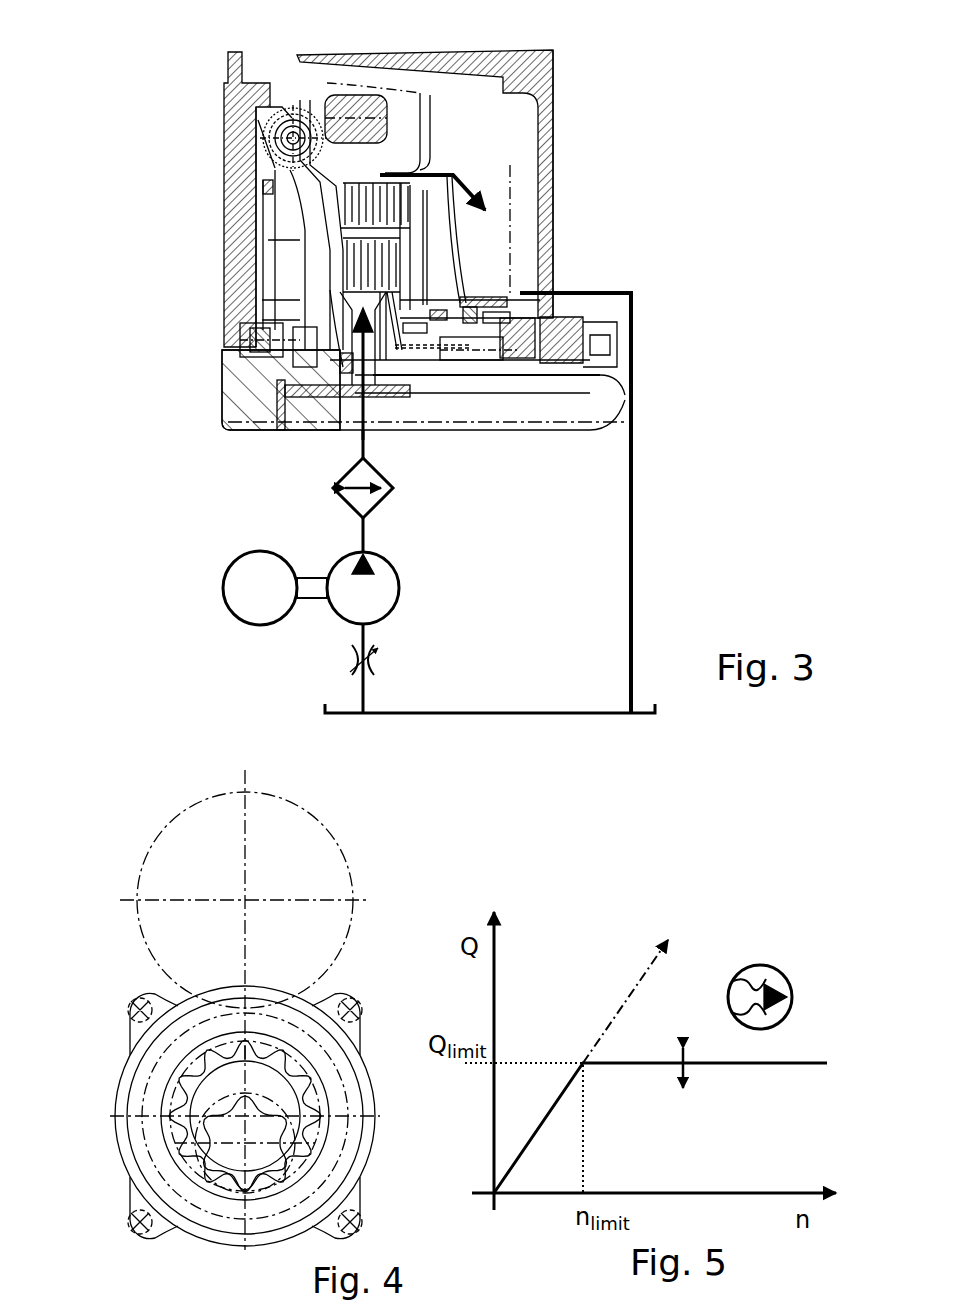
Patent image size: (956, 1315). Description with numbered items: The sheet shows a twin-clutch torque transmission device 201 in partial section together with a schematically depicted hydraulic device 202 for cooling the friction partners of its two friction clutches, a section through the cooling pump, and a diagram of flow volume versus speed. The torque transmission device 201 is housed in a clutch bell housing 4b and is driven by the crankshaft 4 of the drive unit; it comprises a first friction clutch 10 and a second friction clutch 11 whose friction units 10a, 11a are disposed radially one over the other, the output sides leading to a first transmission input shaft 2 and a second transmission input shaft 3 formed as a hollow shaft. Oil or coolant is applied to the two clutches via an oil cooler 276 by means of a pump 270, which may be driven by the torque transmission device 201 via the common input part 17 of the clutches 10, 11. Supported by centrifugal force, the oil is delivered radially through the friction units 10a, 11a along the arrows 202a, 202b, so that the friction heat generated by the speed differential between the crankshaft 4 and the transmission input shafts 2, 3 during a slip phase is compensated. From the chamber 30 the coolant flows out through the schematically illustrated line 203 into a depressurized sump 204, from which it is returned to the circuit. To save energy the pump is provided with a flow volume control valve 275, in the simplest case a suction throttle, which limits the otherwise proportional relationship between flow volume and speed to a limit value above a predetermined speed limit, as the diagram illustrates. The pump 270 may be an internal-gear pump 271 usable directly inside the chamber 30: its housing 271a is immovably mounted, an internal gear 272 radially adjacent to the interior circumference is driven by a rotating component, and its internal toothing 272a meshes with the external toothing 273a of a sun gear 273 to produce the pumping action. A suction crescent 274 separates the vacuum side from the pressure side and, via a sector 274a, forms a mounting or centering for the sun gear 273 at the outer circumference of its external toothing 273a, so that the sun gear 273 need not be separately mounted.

In FIG. 3, the first transmission input shaft 2 is at (426, 402).
In FIG. 3, the second transmission input shaft 3 is at (565, 382).
In FIG. 3, the crankshaft 4 is at (232, 408).
In FIG. 3, the clutch bell housing 4b is at (473, 103).
In FIG. 3, the first friction clutch 10 is at (380, 172).
In FIG. 3, the friction unit of first friction clutch 10a is at (343, 200).
In FIG. 3, the second friction clutch 11 is at (375, 297).
In FIG. 3, the friction unit of second friction clutch 11a is at (340, 268).
In FIG. 3, the input part 17 is at (355, 245).
In FIG. 3, the chamber 30 is at (520, 170).
In FIG. 3, the torque transmission device 201 is at (572, 85).
In FIG. 3, the hydraulic device 202 is at (650, 573).
In FIG. 3, the coolant flow arrow 202a is at (375, 412).
In FIG. 3, the coolant flow arrow 202b is at (450, 172).
In FIG. 3, the line 203 is at (634, 465).
In FIG. 3, the depressurized sump 204 is at (548, 700).
In FIG. 3, the pump 270 is at (368, 590).
In FIG. 4, the internal-gear pump 271 is at (330, 988).
In FIG. 4, the housing 271a is at (353, 1197).
In FIG. 4, the internal gear 272 is at (273, 1207).
In FIG. 4, the internal toothing 272a is at (172, 1137).
In FIG. 4, the sun gear 273 is at (257, 1133).
In FIG. 4, the external toothing 273a is at (237, 1103).
In FIG. 4, the suction crescent 274 is at (260, 1070).
In FIG. 4, the sector 274a is at (273, 1090).
In FIG. 3, the flow volume control valve 275 is at (392, 662).
In FIG. 3, the oil cooler 276 is at (372, 483).